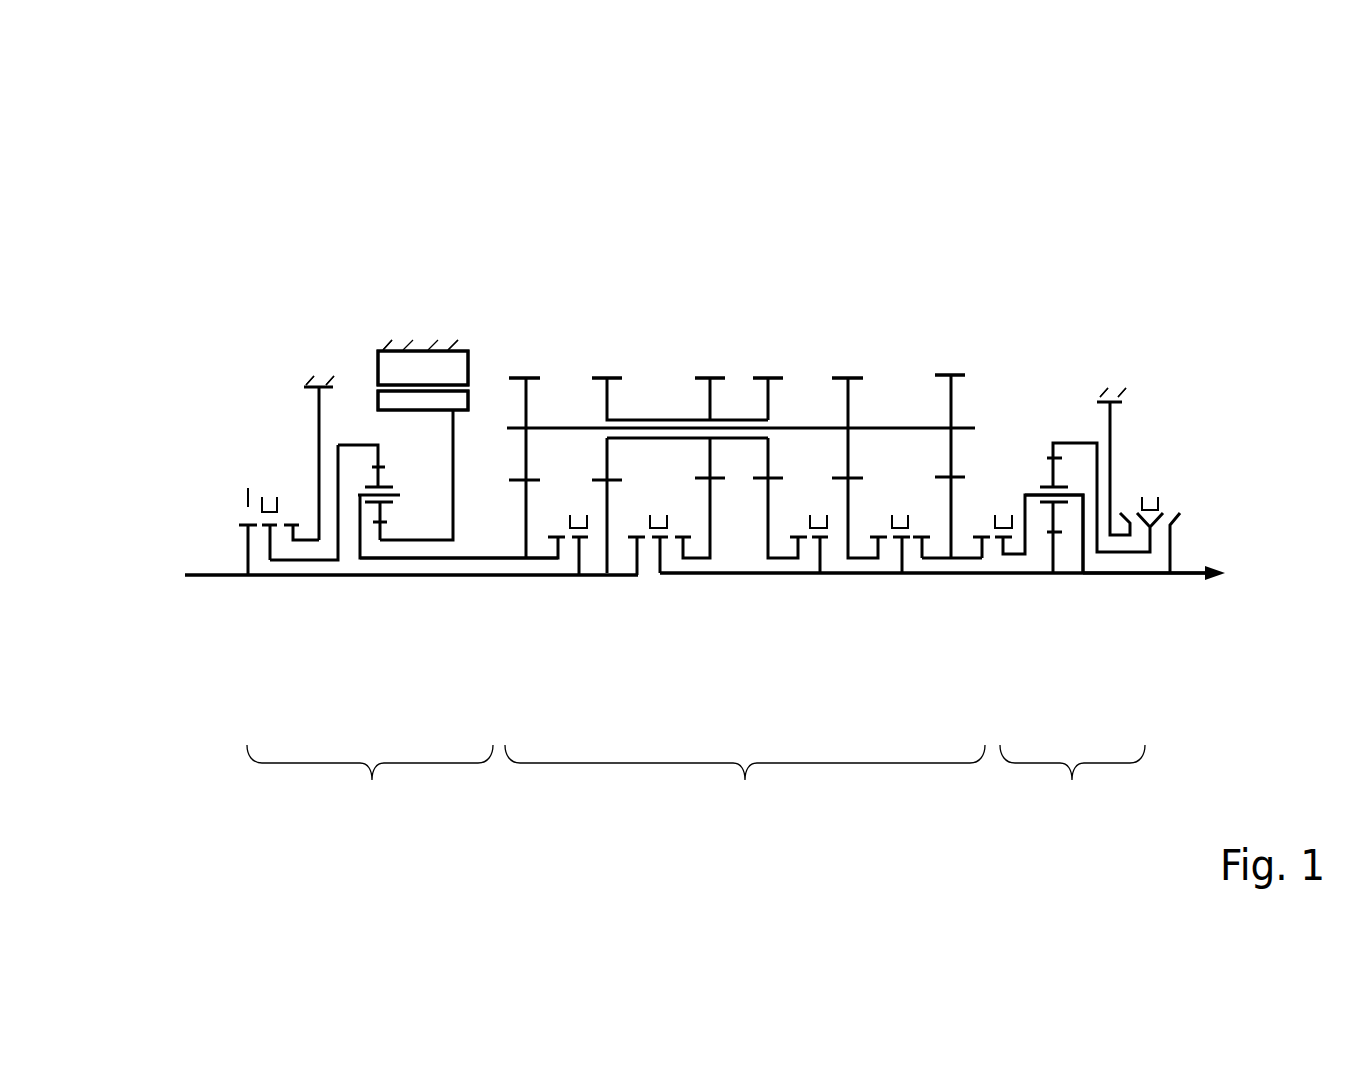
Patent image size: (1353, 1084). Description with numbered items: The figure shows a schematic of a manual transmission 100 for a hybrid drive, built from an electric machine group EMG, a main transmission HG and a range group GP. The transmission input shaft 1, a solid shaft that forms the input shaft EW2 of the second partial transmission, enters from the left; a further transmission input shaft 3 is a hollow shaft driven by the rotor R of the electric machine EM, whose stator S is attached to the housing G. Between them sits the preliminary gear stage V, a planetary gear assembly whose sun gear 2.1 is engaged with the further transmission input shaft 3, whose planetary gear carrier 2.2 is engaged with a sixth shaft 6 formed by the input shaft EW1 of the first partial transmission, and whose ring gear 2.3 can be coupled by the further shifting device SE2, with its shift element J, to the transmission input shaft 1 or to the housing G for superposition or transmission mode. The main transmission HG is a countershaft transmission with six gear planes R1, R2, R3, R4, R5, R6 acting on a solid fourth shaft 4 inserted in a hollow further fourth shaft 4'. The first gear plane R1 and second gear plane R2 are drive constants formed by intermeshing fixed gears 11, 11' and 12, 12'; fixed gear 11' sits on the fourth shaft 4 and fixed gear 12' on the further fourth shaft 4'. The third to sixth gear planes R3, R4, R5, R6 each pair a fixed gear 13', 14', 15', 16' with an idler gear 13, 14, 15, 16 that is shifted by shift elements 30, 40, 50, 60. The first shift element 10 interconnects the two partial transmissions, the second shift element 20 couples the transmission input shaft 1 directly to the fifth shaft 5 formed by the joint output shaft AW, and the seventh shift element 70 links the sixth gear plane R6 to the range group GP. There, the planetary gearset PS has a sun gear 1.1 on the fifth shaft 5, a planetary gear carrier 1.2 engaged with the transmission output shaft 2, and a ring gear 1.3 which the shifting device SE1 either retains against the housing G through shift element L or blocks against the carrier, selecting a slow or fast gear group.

The transmission input shaft 1 is at (207, 577).
The input shaft of the second partial transmission EW2 is at (207, 577).
The transmission output shaft 2 is at (1190, 573).
The further transmission input shaft 3 is at (410, 545).
The fourth shaft 4 is at (741, 270).
The further fourth shaft 4' is at (687, 275).
The fifth shaft 5 is at (1017, 573).
The joint output shaft AW is at (1017, 573).
The sixth shaft 6 is at (465, 560).
The input shaft of the first partial transmission EW1 is at (465, 560).
The first gear element of the preliminary gear stage 2.1 is at (377, 530).
The second gear element of the preliminary gear stage 2.2 is at (377, 505).
The third gear element of the preliminary gear stage 2.3 is at (380, 447).
The first gear element of the planetary gearset 1.1 is at (1055, 508).
The second gear element of the planetary gearset 1.2 is at (1085, 535).
The third gear element of the planetary gearset 1.3 is at (1055, 452).
The fixed gear 11 is at (534, 566).
The fixed gear 12 is at (618, 571).
The idler gear 13 is at (701, 571).
The idler gear 14 is at (781, 571).
The idler gear 15 is at (862, 566).
The idler gear 16 is at (951, 566).
The fixed gear 11' is at (488, 270).
The fixed gear 12' is at (680, 266).
The fixed gear 13' is at (749, 266).
The fixed gear 14' is at (819, 270).
The fixed gear 15' is at (901, 270).
The fixed gear 16' is at (993, 270).
The first shift element 10 is at (563, 520).
The second shift element 20 is at (643, 520).
The third shift element 30 is at (686, 520).
The fourth shift element 40 is at (803, 520).
The fifth shift element 50 is at (885, 520).
The sixth shift element 60 is at (928, 520).
The seventh shift element 70 is at (988, 520).
The manual transmission 100 is at (1097, 245).
The electric machine EM is at (373, 387).
The stator S is at (420, 370).
The rotor R is at (365, 358).
The housing G is at (430, 347).
The preliminary gear stage V is at (358, 480).
The fourth additional shift element J is at (267, 493).
The first additional shift element L is at (1148, 475).
The shifting device SE1 is at (1223, 485).
The further shifting device SE2 is at (202, 505).
The planetary gearset PS is at (1052, 408).
The first gear plane R1 is at (524, 350).
The second gear plane R2 is at (606, 350).
The third gear plane R3 is at (708, 350).
The fourth gear plane R4 is at (767, 350).
The fifth gear plane R5 is at (846, 350).
The sixth gear plane R6 is at (948, 350).
The electric machine group EMG is at (370, 783).
The main transmission HG is at (745, 783).
The range group GP is at (1072, 783).